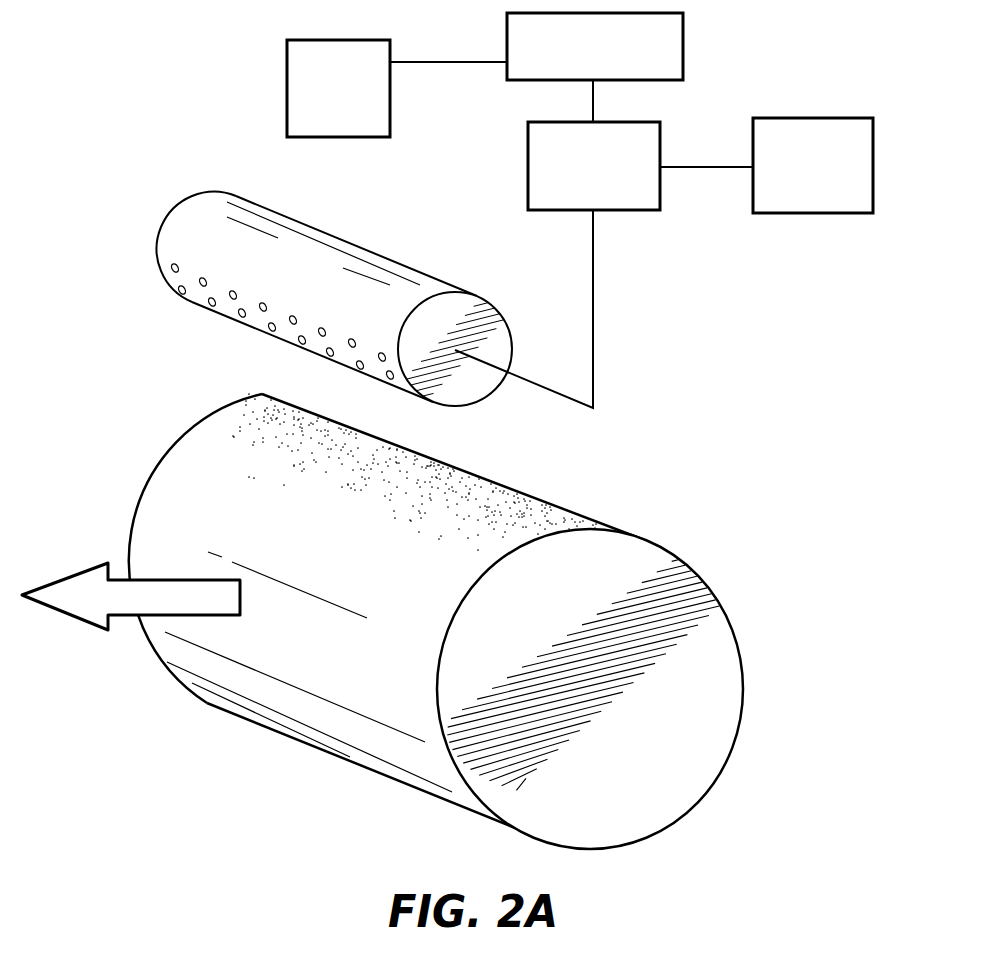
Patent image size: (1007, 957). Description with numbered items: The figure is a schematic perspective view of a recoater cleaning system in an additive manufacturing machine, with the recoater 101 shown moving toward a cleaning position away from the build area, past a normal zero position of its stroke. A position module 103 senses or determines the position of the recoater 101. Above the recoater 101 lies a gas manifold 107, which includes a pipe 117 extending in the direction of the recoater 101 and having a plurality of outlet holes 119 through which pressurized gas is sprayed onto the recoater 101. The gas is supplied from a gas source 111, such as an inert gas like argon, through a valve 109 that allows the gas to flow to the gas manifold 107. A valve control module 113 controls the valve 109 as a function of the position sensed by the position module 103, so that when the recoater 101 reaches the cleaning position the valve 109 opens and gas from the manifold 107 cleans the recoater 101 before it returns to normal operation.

The recoater 101 is at (609, 733).
The position module 103 is at (315, 102).
The gas manifold 107 is at (287, 282).
The valve 109 is at (571, 180).
The gas source 111 is at (790, 180).
The valve control module 113 is at (572, 60).
The pipe 117 is at (193, 232).
The outlet holes 119 is at (200, 282).